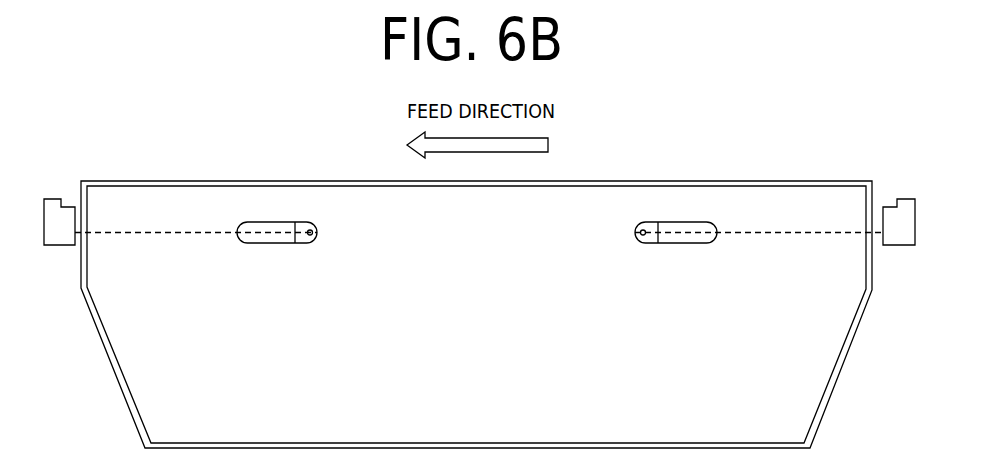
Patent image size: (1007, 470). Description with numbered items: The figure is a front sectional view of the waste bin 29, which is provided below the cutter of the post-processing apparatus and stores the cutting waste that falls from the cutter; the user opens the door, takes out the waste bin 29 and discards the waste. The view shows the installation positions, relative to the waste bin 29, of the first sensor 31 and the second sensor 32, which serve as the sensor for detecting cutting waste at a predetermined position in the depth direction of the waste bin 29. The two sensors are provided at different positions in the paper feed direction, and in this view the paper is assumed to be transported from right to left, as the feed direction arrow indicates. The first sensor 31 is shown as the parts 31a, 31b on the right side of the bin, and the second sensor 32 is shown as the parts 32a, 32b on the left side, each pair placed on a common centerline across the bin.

The waste bin 29 is at (112, 363).
The second sensor 32 is at (197, 223).
The second side guide bracket 32a is at (58, 198).
The second side guide slot 32b is at (303, 242).
The first sensor 31 is at (777, 223).
The first side guide bracket 31a is at (903, 197).
The first side guide slot 31b is at (650, 242).